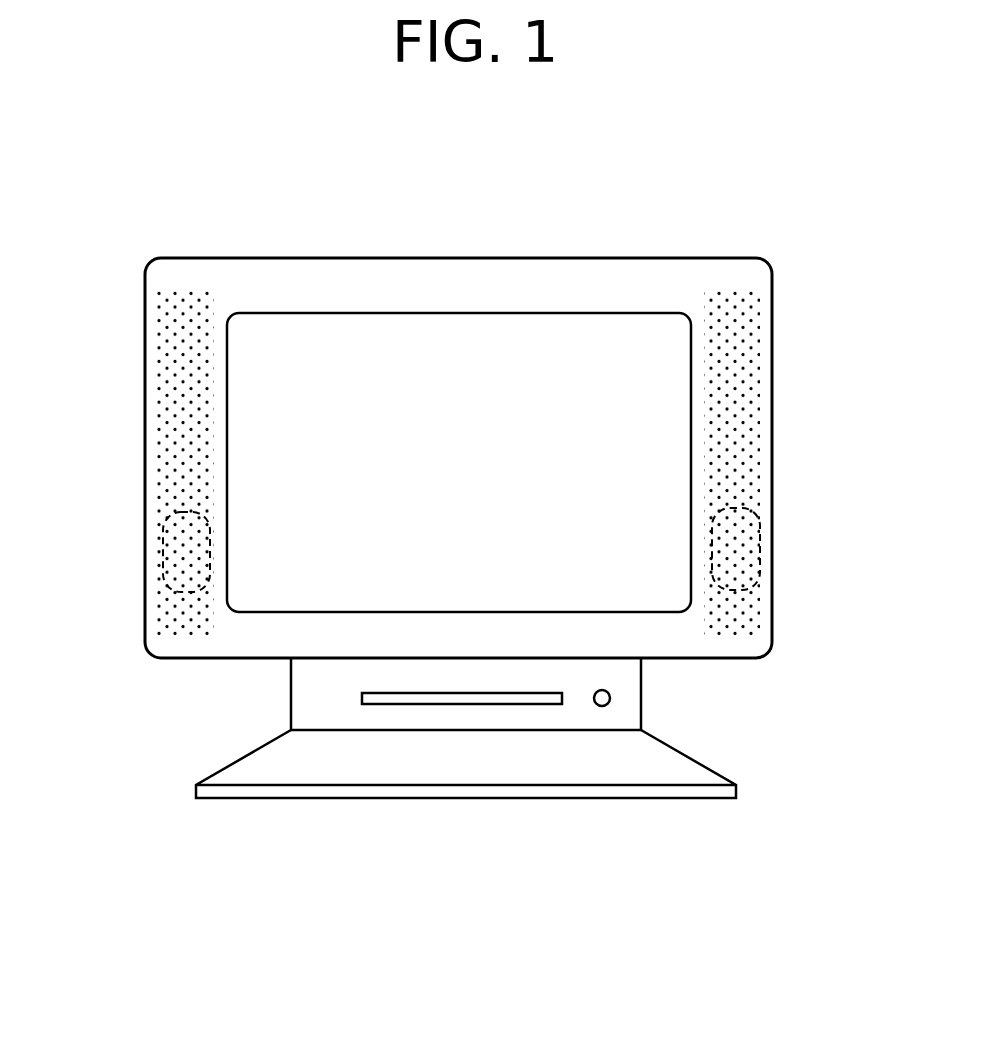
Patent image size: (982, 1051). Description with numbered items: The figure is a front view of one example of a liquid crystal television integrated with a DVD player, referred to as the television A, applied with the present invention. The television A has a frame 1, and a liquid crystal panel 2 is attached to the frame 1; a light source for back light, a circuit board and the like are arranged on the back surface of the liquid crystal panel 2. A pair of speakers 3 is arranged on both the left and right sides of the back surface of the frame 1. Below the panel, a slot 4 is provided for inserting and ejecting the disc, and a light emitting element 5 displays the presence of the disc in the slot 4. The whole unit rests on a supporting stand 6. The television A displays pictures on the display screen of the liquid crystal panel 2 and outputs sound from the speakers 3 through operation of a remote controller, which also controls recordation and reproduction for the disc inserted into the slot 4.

The television A is at (626, 218).
The frame 1 is at (344, 259).
The liquid crystal panel 2 is at (653, 398).
The pair of speakers 3 is at (165, 545).
The slot 4 is at (362, 697).
The light emitting element 5 is at (610, 698).
The supporting stand 6 is at (435, 798).